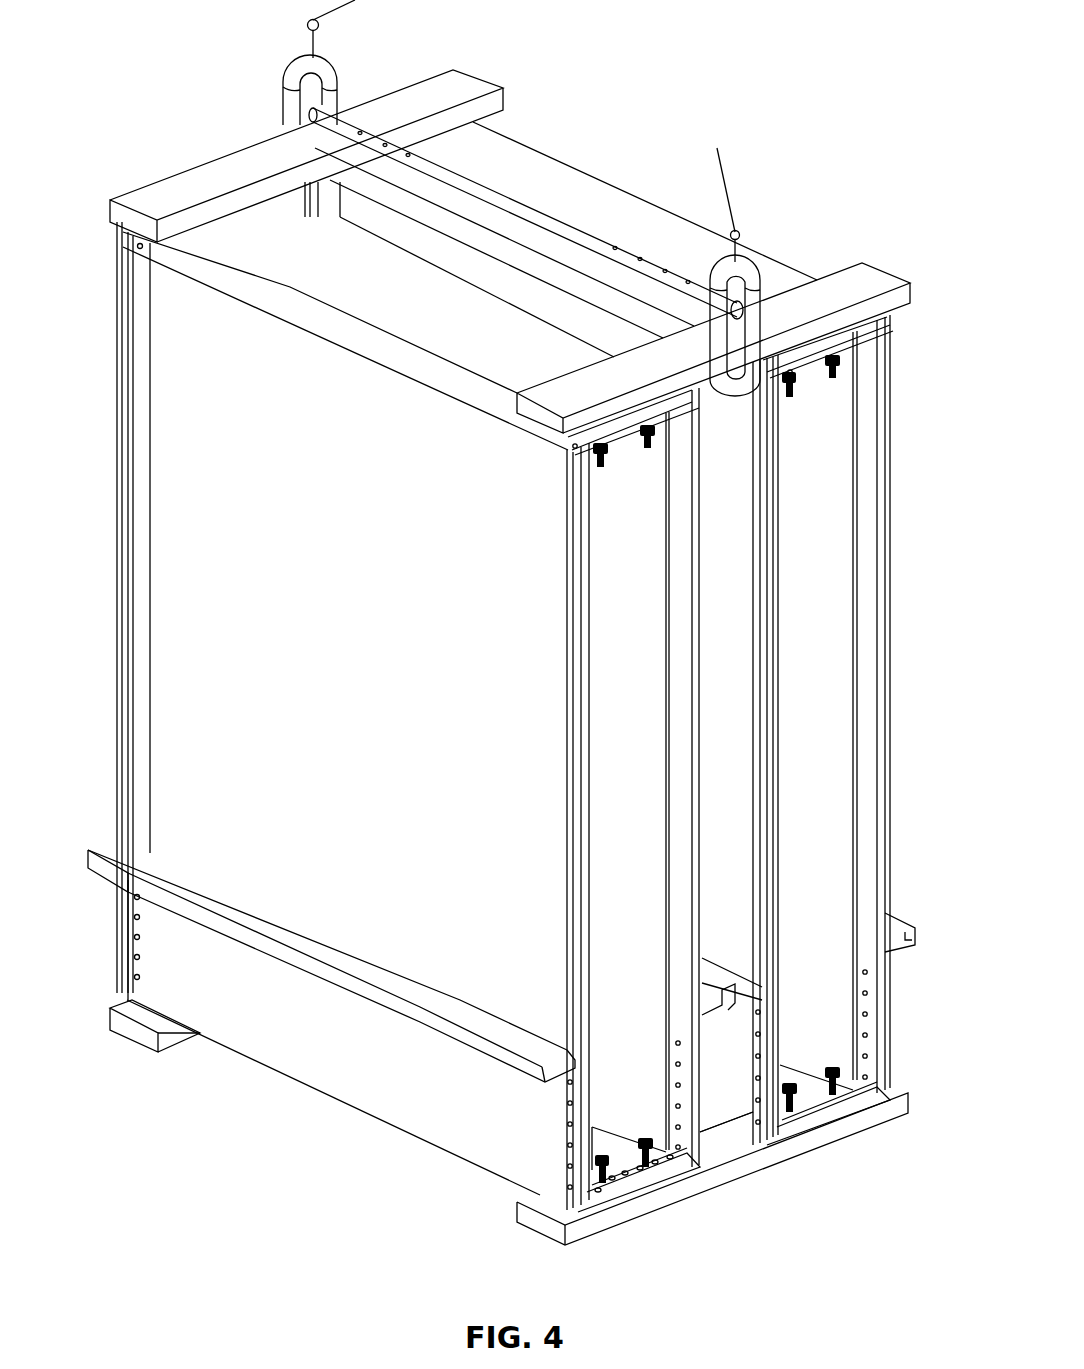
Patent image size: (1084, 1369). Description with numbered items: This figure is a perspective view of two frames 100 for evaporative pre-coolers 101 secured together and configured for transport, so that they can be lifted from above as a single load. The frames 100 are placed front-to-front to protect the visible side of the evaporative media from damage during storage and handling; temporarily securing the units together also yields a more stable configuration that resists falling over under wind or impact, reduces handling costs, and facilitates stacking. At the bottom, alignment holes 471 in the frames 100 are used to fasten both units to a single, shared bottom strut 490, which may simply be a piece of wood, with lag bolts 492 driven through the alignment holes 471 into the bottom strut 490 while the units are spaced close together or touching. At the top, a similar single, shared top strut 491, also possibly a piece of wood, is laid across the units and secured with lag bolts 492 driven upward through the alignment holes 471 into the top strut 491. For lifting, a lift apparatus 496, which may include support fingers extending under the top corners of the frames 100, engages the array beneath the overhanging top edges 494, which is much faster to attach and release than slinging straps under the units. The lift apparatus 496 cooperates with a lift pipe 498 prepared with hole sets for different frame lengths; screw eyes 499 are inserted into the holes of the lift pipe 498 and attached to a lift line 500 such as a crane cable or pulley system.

The frame 100 is at (570, 153).
The evaporative pre-cooler 101 is at (108, 224).
The lift pipe 498 is at (454, 182).
The lift apparatus 496 is at (762, 273).
The lift line 500 is at (722, 163).
The screw eye 499 is at (741, 232).
The top strut 491 is at (876, 279).
The overhanging top edge 494 is at (800, 357).
The lag bolt 492 is at (840, 372).
The alignment hole 471 is at (605, 1190).
The bottom strut 490 is at (875, 1124).